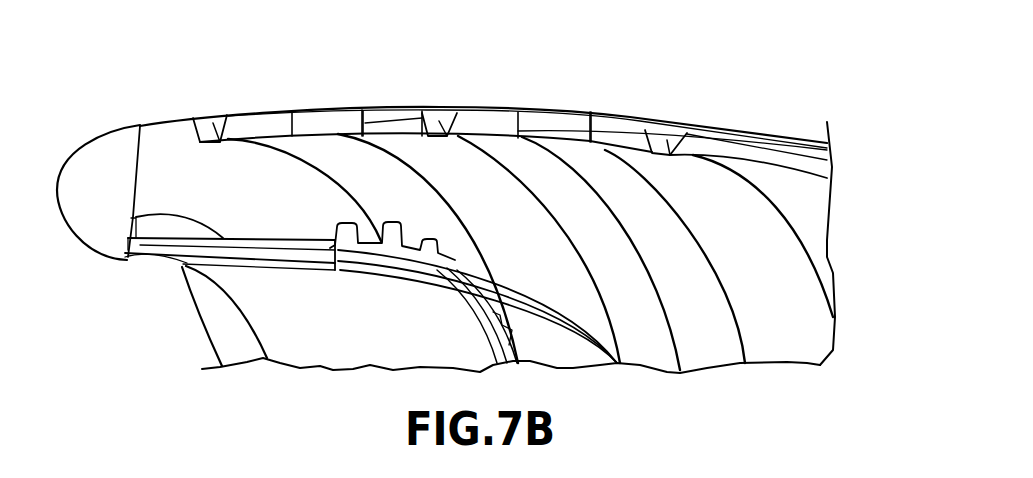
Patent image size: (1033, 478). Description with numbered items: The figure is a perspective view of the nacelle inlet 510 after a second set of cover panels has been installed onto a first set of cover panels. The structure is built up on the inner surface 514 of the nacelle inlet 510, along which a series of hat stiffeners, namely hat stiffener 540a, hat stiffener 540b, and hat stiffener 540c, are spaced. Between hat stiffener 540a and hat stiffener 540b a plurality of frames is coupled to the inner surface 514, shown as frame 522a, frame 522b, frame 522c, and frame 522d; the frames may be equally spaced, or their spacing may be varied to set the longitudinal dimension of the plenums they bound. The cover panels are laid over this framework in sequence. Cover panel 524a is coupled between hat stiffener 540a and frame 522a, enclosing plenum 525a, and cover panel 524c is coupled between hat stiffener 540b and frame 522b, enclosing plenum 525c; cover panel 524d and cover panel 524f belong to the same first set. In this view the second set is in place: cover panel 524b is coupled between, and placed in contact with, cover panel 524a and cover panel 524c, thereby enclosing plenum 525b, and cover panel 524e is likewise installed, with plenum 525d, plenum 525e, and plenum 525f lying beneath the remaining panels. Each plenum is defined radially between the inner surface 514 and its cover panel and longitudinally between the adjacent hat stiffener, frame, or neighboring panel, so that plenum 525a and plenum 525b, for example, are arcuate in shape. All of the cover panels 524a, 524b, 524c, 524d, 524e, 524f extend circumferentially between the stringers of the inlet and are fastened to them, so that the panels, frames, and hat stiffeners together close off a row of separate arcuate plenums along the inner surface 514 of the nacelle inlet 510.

The nacelle inlet 510 is at (126, 100).
The inner surface 514 is at (285, 202).
The frame 522a is at (294, 110).
The frame 522b is at (361, 108).
The frame 522c is at (521, 110).
The frame 522d is at (588, 110).
The cover panel 524a is at (359, 194).
The cover panel 524b is at (469, 207).
The cover panel 524c is at (572, 233).
The cover panel 524d is at (636, 234).
The cover panel 524e is at (719, 239).
The cover panel 524f is at (821, 217).
The plenum 525a is at (270, 126).
The plenum 525b is at (338, 126).
The plenum 525c is at (407, 121).
The plenum 525d is at (497, 121).
The plenum 525e is at (573, 124).
The plenum 525f is at (628, 135).
The hat stiffener 540a is at (213, 123).
The hat stiffener 540b is at (439, 121).
The hat stiffener 540c is at (667, 140).